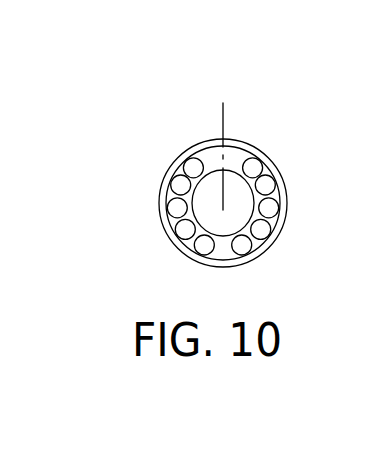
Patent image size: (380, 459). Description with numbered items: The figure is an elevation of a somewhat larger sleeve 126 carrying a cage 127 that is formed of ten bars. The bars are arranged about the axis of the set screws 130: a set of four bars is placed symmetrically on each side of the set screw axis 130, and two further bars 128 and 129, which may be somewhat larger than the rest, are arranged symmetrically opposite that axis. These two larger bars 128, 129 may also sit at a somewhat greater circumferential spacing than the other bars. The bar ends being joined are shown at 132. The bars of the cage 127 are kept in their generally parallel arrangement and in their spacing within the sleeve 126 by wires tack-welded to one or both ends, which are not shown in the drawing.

The sleeve 126 is at (270, 148).
The cage 127 is at (278, 182).
The bar 128 is at (205, 248).
The bar 129 is at (242, 248).
The set screw axis 130 is at (223, 127).
The bar ends 132 is at (203, 202).